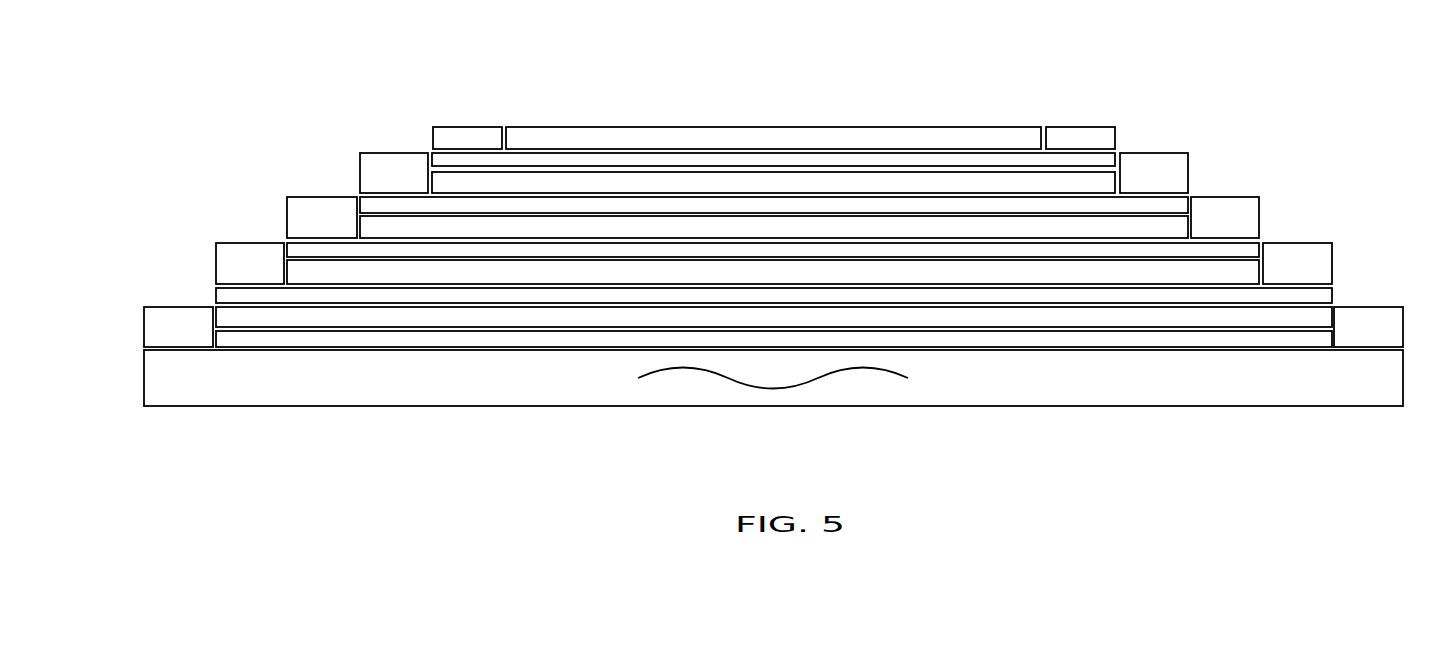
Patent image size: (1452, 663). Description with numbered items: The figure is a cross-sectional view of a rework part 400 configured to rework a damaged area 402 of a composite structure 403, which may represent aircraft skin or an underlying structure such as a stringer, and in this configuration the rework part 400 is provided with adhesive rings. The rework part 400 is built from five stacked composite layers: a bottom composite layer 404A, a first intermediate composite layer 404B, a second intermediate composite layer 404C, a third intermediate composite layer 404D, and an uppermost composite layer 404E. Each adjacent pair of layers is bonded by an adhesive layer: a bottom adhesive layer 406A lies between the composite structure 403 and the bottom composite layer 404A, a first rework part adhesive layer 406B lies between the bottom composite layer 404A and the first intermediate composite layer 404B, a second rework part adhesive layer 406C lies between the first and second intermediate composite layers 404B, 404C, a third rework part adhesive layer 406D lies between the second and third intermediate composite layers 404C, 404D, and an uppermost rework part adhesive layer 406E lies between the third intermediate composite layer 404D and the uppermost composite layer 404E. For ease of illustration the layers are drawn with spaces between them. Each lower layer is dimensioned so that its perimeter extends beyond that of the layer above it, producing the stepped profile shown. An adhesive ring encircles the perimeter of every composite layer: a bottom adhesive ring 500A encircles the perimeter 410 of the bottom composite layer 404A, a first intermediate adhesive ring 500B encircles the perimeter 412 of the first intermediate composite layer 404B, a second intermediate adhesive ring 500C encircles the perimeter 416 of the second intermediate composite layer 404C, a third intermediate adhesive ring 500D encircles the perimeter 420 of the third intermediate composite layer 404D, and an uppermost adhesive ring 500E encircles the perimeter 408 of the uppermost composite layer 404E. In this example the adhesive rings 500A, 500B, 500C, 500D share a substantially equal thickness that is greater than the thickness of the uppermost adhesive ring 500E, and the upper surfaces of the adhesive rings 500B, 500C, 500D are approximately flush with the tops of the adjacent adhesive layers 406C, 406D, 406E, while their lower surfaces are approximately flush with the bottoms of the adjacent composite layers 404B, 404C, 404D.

The rework part 400 is at (770, 58).
The damaged area 402 is at (725, 395).
The composite structure 403 is at (1375, 387).
The bottom composite layer 404A is at (254, 320).
The first intermediate composite layer 404B is at (302, 273).
The second intermediate composite layer 404C is at (379, 225).
The third intermediate composite layer 404D is at (450, 185).
The uppermost composite layer 404E is at (532, 138).
The bottom adhesive layer 406A is at (1298, 342).
The first rework part adhesive layer 406B is at (1232, 295).
The second rework part adhesive layer 406C is at (1152, 247).
The third rework part adhesive layer 406D is at (1078, 202).
The uppermost rework part adhesive layer 406E is at (995, 160).
The perimeter of uppermost composite layer 408 is at (497, 135).
The perimeter of bottom composite layer 410 is at (213, 313).
The perimeter of first intermediate composite layer 412 is at (290, 275).
The perimeter of second intermediate composite layer 416 is at (359, 229).
The perimeter of third intermediate composite layer 420 is at (432, 182).
The bottom adhesive ring 500A is at (148, 323).
The first intermediate adhesive ring 500B is at (225, 266).
The second intermediate adhesive ring 500C is at (297, 220).
The third intermediate adhesive ring 500D is at (370, 175).
The uppermost adhesive ring 500E is at (447, 140).